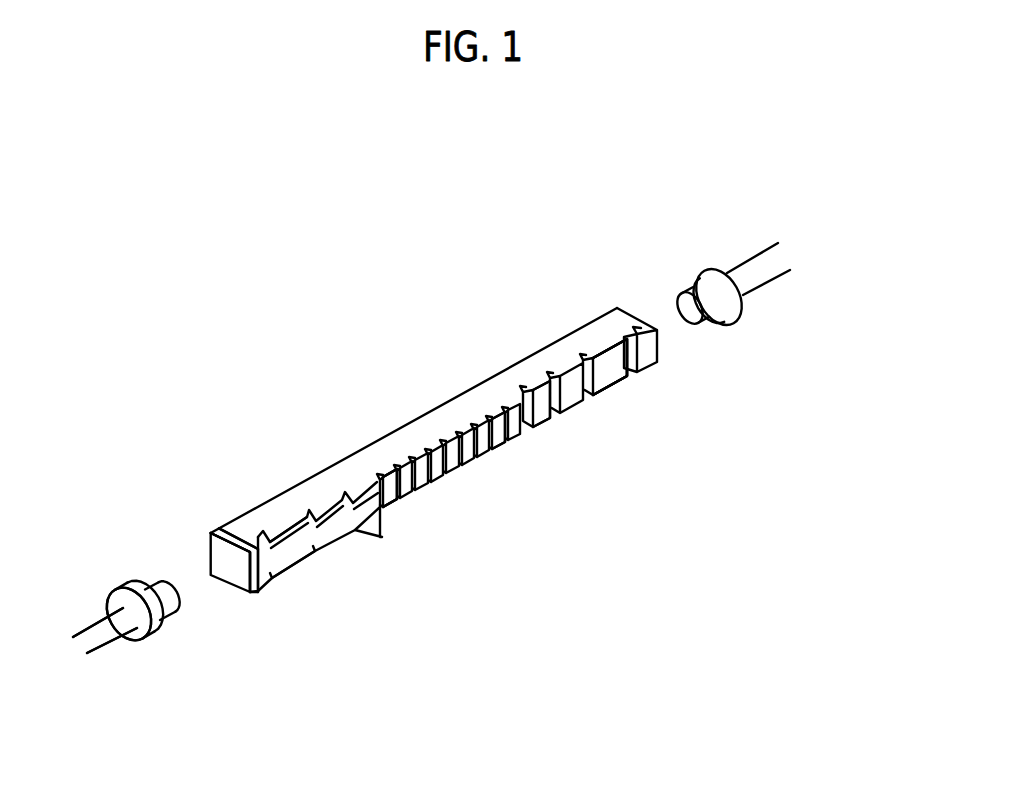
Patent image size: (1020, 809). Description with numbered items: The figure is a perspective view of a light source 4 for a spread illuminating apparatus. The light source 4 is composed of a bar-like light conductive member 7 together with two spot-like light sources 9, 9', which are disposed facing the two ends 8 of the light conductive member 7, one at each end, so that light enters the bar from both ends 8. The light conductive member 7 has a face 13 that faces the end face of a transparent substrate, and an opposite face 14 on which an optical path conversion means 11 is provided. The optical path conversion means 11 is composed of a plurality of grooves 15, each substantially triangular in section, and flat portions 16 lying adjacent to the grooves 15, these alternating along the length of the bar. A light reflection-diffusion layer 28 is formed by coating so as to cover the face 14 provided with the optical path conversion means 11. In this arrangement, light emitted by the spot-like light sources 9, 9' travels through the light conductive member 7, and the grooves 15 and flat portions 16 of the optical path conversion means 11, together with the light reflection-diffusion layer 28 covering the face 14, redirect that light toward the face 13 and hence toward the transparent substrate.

The light source 4 is at (232, 472).
The light conductive member 7 is at (233, 527).
The ends 8 is at (233, 567).
The spot-like light source 9 is at (126, 556).
The spot-like light source 9' is at (726, 247).
The optical path conversion means 11 is at (568, 238).
The face 13 is at (388, 433).
The face 14 is at (613, 372).
The grooves 15 is at (493, 412).
The flat portions 16 is at (543, 390).
The light reflection-diffusion layer 28 is at (335, 537).